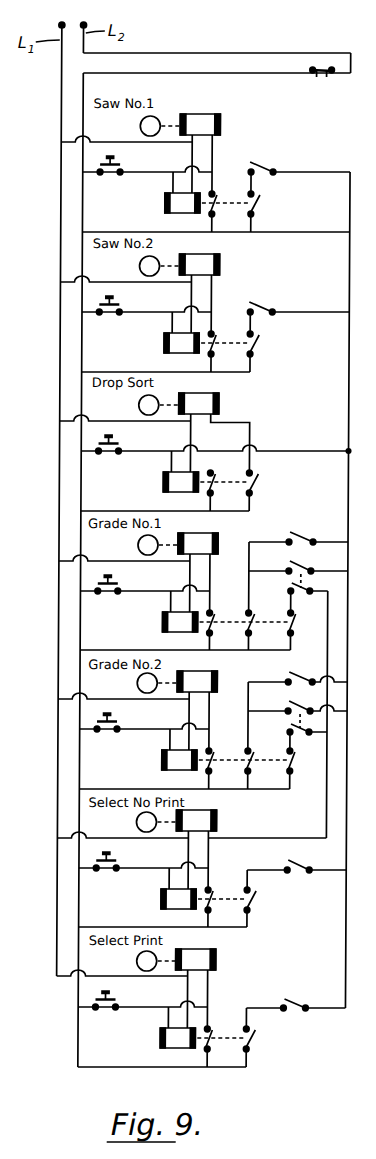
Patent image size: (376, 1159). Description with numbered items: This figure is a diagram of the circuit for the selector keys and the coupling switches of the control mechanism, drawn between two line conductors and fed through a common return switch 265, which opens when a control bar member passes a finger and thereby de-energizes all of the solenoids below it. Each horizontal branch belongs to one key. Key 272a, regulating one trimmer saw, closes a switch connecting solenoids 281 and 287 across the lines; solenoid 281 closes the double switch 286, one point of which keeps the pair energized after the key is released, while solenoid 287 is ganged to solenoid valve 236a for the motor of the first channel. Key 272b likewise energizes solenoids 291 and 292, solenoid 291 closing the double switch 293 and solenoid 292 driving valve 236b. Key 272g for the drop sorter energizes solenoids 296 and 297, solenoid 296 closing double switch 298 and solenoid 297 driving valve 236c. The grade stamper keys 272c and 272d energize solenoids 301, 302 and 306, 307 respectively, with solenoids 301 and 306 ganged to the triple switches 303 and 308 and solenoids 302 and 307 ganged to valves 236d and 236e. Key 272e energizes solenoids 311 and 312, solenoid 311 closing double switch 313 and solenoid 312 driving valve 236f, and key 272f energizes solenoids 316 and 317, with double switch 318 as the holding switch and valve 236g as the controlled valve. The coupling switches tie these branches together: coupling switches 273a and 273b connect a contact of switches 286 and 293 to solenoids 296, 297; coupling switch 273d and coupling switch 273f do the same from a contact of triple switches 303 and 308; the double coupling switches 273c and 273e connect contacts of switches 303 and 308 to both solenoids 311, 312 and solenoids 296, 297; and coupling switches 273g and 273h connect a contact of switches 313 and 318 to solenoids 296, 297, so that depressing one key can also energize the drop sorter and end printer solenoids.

The return switch 265 is at (311, 70).
The solenoid valve 236a is at (141, 124).
The solenoid valve 236b is at (141, 264).
The solenoid valve 236c is at (141, 403).
The solenoid valve 236d is at (141, 544).
The solenoid valve 236e is at (141, 682).
The solenoid valve 236f is at (141, 821).
The solenoid valve 236g is at (142, 959).
The selector key 272a is at (117, 164).
The selector key 272b is at (117, 304).
The selector key 272g is at (118, 444).
The selector key 272c is at (118, 583).
The selector key 272d is at (118, 722).
The selector key 272e is at (119, 861).
The selector key 272f is at (119, 1000).
The solenoid 287 is at (221, 130).
The solenoid 292 is at (221, 270).
The solenoid 297 is at (221, 410).
The solenoid 302 is at (219, 548).
The solenoid 307 is at (219, 688).
The solenoid 312 is at (221, 828).
The solenoid 317 is at (221, 965).
The solenoid 281 is at (166, 205).
The solenoid 291 is at (166, 345).
The solenoid 296 is at (166, 484).
The solenoid 301 is at (166, 624).
The solenoid 306 is at (166, 762).
The solenoid 311 is at (166, 900).
The solenoid 316 is at (166, 1040).
The double switch 286 is at (258, 207).
The double switch 293 is at (259, 344).
The double switch 298 is at (259, 482).
The triple switch 303 is at (253, 627).
The triple switch 308 is at (272, 748).
The double switch 313 is at (259, 896).
The double switch 318 is at (260, 1038).
The coupling switch 273a is at (266, 166).
The coupling switch 273b is at (266, 306).
The coupling switch 273c is at (302, 567).
The coupling switch 273d is at (302, 536).
The coupling switch 273e is at (302, 705).
The coupling switch 273f is at (306, 676).
The coupling switch 273g is at (306, 868).
The coupling switch 273h is at (312, 988).